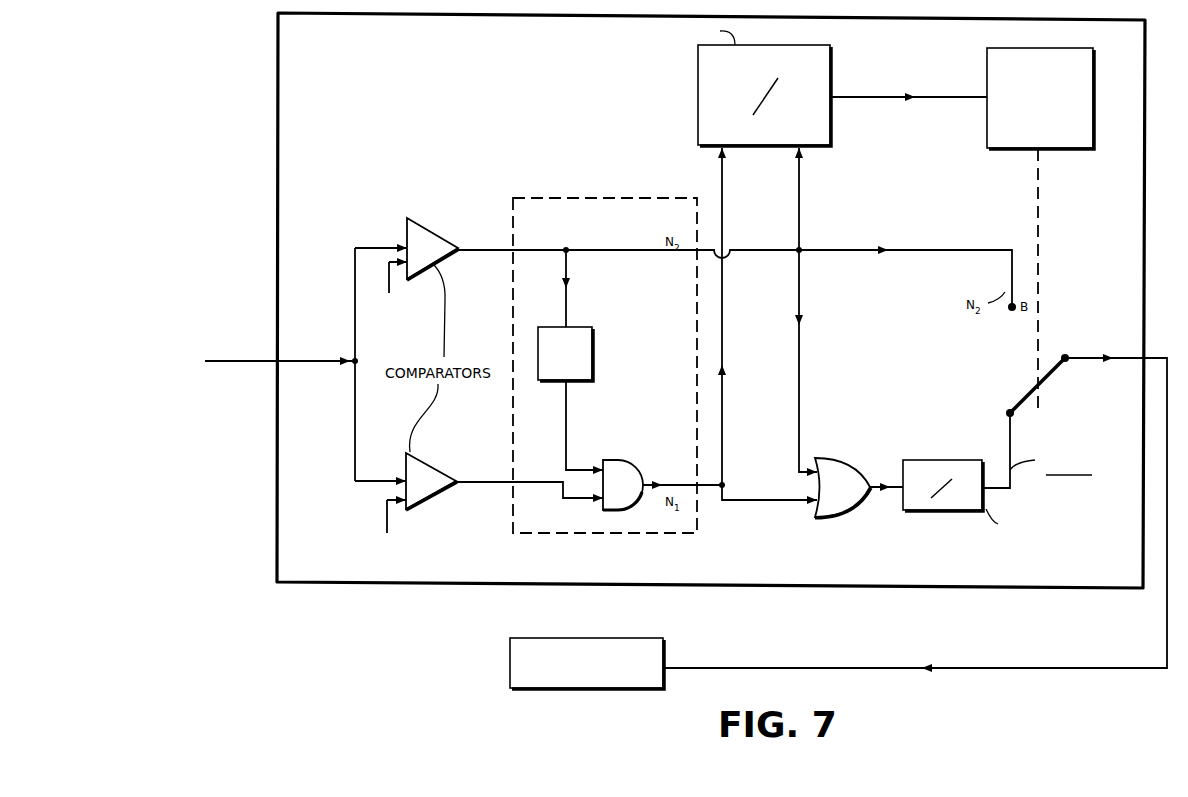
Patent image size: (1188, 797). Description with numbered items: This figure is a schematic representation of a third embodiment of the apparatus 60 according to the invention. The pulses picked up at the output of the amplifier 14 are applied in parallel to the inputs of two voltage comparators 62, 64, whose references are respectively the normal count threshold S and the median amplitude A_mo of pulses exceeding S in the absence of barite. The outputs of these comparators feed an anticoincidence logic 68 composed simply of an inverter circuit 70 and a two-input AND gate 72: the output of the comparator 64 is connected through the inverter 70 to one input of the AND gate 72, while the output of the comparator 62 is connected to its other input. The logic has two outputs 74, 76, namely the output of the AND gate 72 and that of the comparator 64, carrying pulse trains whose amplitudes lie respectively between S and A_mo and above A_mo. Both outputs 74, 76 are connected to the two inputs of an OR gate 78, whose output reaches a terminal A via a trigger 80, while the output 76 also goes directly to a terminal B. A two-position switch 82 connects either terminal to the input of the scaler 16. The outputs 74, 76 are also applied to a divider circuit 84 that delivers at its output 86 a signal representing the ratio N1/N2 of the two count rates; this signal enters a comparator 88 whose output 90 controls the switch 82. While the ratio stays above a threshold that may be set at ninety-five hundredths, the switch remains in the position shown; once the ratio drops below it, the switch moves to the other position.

The amplifier 14 is at (281, 354).
The scaler 16 is at (587, 663).
The apparatus 60 is at (278, 93).
The voltage comparator 62 is at (420, 458).
The voltage comparator 64 is at (430, 228).
The anticoincidence logic 68 is at (620, 197).
The inverter circuit 70 is at (593, 358).
The two-input AND gate 72 is at (633, 469).
The output of the logic 74 is at (697, 488).
The output of the logic 76 is at (700, 249).
The OR gate 78 is at (838, 462).
The trigger 80 is at (940, 512).
The switch 82 is at (1046, 379).
The divider circuit 84 is at (698, 103).
The output of the divider circuit 86 is at (841, 97).
The comparator 88 is at (1017, 150).
The output of the comparator 90 is at (1040, 150).